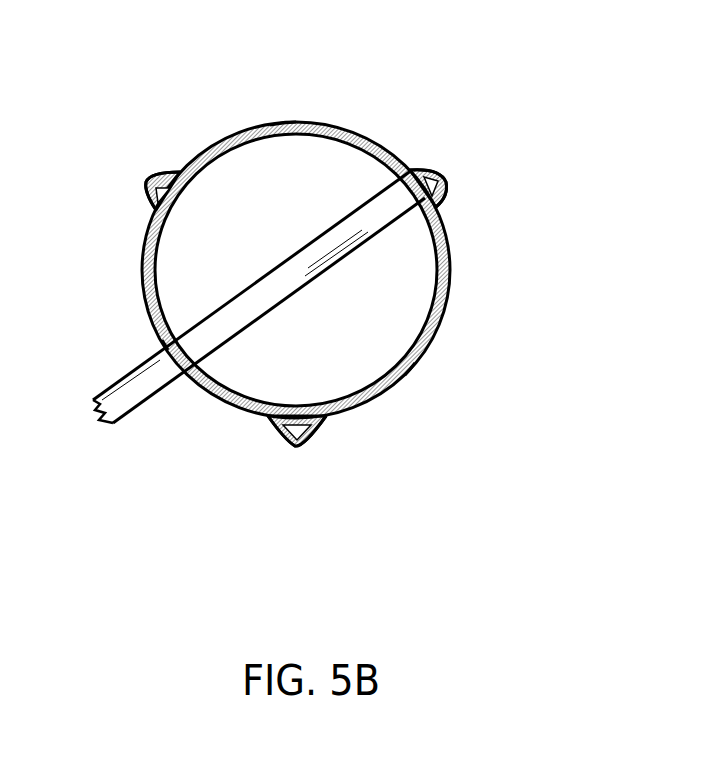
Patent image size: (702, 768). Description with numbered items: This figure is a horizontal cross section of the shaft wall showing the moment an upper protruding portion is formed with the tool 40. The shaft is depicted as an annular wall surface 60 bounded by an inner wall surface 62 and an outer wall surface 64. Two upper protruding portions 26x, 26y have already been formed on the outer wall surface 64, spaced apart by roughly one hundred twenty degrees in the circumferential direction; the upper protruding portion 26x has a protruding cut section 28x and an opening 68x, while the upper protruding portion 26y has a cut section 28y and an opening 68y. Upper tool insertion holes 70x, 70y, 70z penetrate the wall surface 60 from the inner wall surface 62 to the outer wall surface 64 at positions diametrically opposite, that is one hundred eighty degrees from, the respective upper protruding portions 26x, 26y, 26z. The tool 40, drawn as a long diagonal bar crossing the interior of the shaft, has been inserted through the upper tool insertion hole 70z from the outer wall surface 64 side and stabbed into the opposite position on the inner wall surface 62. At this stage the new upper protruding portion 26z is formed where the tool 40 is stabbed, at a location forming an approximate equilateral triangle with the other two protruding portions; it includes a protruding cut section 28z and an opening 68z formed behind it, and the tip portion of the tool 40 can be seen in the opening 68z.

The wall surface 60 is at (330, 122).
The inner wall surface 62 is at (355, 147).
The outer wall surface 64 is at (352, 130).
The tool 40 is at (150, 405).
The upper protruding portion 26x is at (281, 484).
The upper protruding portion 26y is at (110, 146).
The upper protruding portion 26z is at (492, 174).
The protruding cut section 28x is at (280, 440).
The cut section 28y is at (145, 183).
The protruding cut section 28z is at (445, 182).
The opening 68x is at (313, 437).
The opening 68y is at (148, 192).
The opening 68z is at (443, 202).
The upper tool insertion hole 70x is at (283, 121).
The upper tool insertion hole 70y is at (415, 363).
The upper tool insertion hole 70z is at (165, 345).